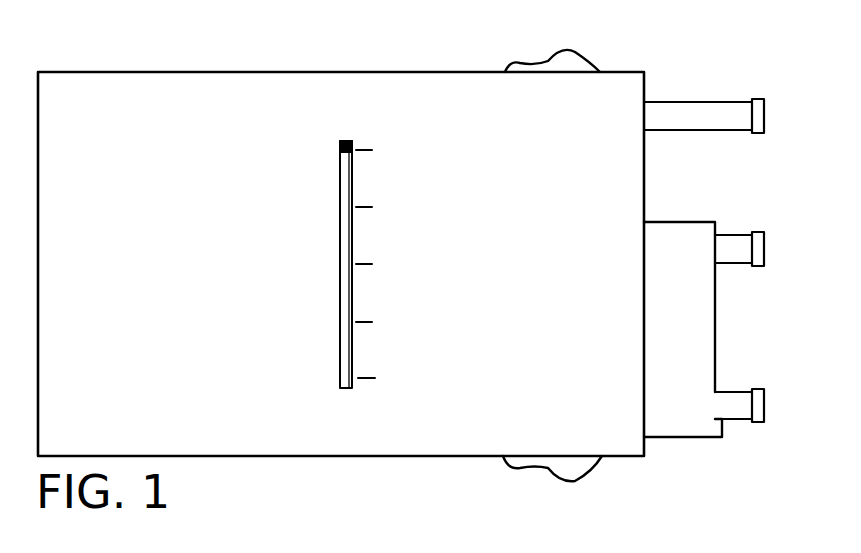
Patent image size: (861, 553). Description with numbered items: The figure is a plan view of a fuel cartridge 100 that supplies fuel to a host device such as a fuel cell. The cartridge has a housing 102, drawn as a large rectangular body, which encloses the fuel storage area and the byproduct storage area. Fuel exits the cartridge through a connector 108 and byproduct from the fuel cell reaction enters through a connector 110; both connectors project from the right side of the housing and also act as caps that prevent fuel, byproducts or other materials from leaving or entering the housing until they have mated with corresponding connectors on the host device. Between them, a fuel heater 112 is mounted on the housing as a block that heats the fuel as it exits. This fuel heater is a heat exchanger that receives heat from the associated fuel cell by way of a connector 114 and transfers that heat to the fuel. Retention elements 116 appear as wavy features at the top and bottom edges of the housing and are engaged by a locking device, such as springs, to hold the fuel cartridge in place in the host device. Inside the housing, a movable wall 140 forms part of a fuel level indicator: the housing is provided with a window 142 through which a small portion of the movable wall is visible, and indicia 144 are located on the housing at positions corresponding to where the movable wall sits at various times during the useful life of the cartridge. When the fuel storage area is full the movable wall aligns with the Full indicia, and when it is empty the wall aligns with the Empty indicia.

The fuel cartridge 100 is at (99, 36).
The housing 102 is at (178, 72).
The connector 108 is at (735, 422).
The connector 110 is at (737, 100).
The fuel heater 112 is at (673, 437).
The connector 114 is at (735, 234).
The retention elements 116 is at (568, 48).
The movable wall 140 is at (340, 150).
The window 142 is at (340, 250).
The indicia 144 is at (427, 113).